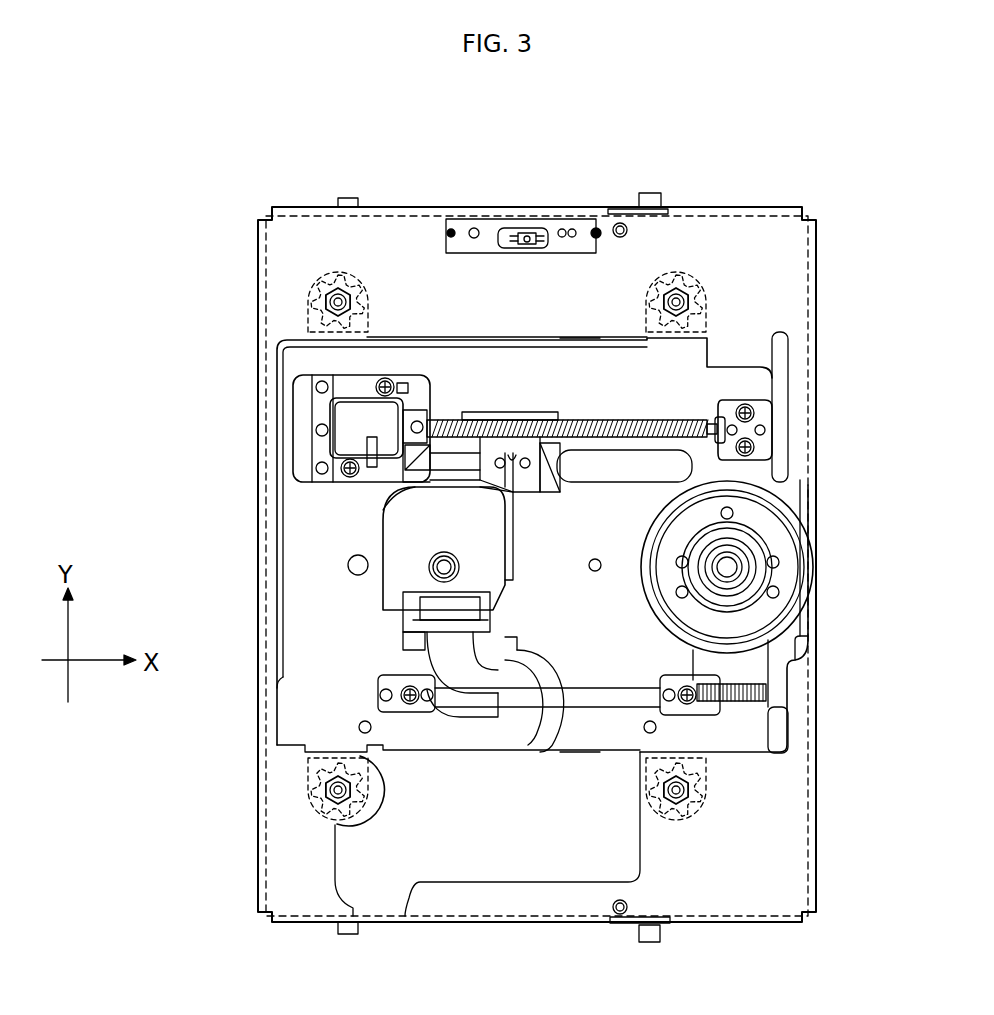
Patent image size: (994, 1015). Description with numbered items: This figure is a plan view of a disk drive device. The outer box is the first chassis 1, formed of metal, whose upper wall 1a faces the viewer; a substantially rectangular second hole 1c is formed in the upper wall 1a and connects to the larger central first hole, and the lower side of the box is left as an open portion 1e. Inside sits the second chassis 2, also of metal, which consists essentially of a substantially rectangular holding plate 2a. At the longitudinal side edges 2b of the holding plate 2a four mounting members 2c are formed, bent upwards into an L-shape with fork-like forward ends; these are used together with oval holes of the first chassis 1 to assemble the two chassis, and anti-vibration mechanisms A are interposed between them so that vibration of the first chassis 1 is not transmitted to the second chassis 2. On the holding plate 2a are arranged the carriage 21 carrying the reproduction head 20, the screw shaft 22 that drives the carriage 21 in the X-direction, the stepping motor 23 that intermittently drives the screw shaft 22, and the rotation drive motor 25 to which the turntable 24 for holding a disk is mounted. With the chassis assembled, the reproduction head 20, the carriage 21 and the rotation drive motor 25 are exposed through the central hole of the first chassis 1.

The first chassis 1 is at (715, 212).
The upper wall 1a is at (777, 242).
The second hole 1c is at (505, 845).
The open portion 1e is at (797, 640).
The second chassis 2 is at (750, 368).
The holding plate 2a is at (317, 720).
The longitudinal side edges 2b is at (580, 338).
The mounting members 2c is at (372, 295).
The reproduction head 20 is at (440, 570).
The carriage 21 is at (403, 537).
The screw shaft 22 is at (700, 412).
The stepping motor 23 is at (363, 423).
The turntable 24 is at (797, 545).
The rotation drive motor 25 is at (790, 583).
The anti-vibration mechanisms A is at (308, 285).